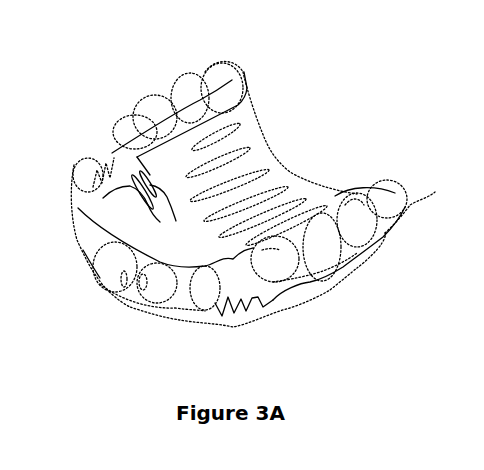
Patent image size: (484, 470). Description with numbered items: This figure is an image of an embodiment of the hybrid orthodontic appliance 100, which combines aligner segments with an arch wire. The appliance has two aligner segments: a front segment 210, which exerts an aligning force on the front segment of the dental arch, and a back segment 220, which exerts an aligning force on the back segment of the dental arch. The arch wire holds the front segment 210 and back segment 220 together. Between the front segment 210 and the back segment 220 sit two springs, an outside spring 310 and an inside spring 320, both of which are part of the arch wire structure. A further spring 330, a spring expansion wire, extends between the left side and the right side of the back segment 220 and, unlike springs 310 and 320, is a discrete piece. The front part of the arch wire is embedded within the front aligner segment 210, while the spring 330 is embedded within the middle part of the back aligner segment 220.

The hybrid orthodontic appliance 100 is at (253, 210).
The front segment 210 is at (103, 277).
The back segment 220 is at (181, 74).
The spring 310 is at (112, 156).
The spring 320 is at (230, 258).
The spring 330 is at (263, 188).